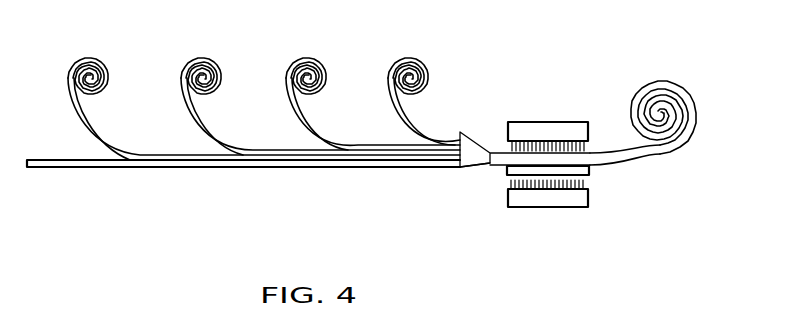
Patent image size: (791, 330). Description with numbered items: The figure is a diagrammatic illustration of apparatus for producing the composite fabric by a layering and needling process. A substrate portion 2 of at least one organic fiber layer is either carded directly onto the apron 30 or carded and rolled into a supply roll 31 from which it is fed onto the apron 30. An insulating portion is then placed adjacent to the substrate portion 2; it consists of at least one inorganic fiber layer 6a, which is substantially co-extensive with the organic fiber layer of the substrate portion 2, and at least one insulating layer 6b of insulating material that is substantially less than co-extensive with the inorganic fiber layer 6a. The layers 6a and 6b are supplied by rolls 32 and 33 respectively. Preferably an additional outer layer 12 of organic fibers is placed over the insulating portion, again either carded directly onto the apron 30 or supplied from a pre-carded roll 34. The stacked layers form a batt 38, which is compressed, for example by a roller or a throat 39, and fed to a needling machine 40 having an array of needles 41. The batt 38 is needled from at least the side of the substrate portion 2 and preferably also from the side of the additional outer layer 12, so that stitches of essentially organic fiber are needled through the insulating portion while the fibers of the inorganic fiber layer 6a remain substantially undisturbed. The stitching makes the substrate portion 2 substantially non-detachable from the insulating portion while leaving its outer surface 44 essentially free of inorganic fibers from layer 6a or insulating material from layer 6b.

The substrate portion 2 is at (82, 124).
The inorganic fiber layer 6a is at (202, 128).
The insulating layer 6b is at (307, 127).
The additional outer layer 12 is at (404, 110).
The apron 30 is at (100, 168).
The supply roll 31 is at (109, 63).
The roll 32 is at (221, 63).
The roll 33 is at (324, 63).
The pre-carded roll 34 is at (426, 63).
The batt 38 is at (458, 132).
The throat 39 is at (478, 170).
The needling machine 40 is at (549, 122).
The array of needles 41 is at (588, 182).
The outer surface 44 is at (648, 158).